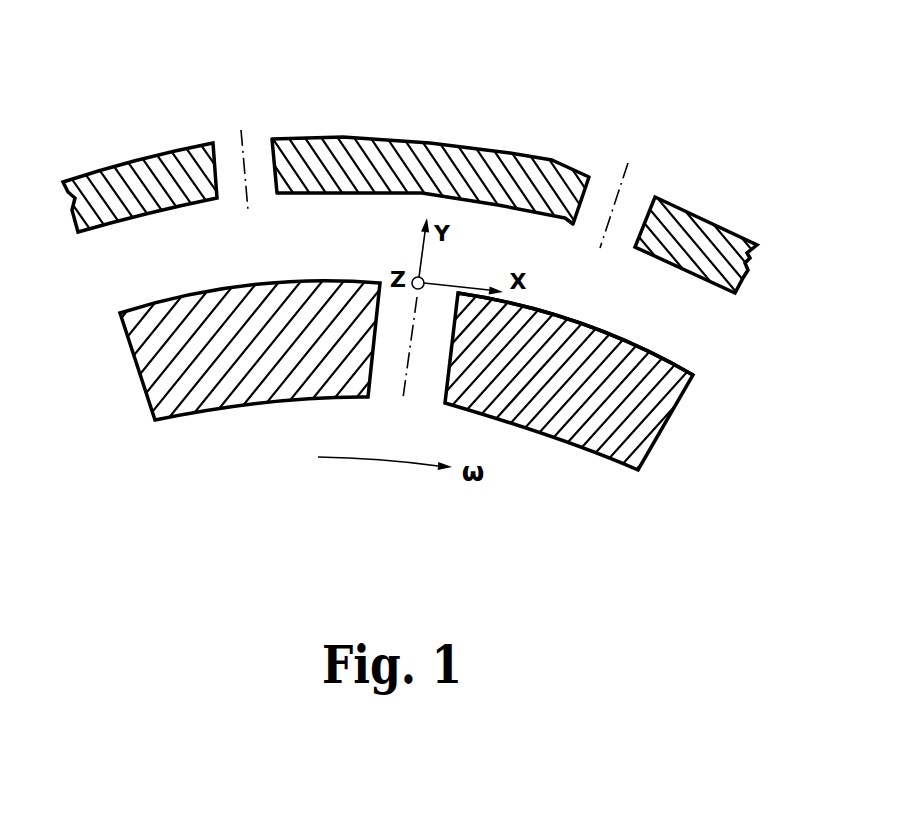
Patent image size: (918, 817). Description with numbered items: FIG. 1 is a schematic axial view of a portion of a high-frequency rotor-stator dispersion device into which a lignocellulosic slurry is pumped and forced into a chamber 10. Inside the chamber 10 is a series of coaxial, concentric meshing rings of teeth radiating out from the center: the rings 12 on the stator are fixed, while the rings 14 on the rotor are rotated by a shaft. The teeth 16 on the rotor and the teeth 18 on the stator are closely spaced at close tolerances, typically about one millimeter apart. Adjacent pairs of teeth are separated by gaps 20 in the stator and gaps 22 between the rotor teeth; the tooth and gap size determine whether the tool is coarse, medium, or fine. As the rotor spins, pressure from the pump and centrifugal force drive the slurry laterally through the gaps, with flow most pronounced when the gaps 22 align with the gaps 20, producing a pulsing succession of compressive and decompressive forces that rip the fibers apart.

The chamber 10 is at (436, 281).
The rings on the stator 12 is at (547, 162).
The rings on the rotor 14 is at (600, 453).
The teeth on the rotor 16 is at (665, 357).
The teeth on the stator 18 is at (705, 215).
The gaps in the stator 20 is at (252, 143).
The gaps between the rotor teeth 22 is at (392, 390).